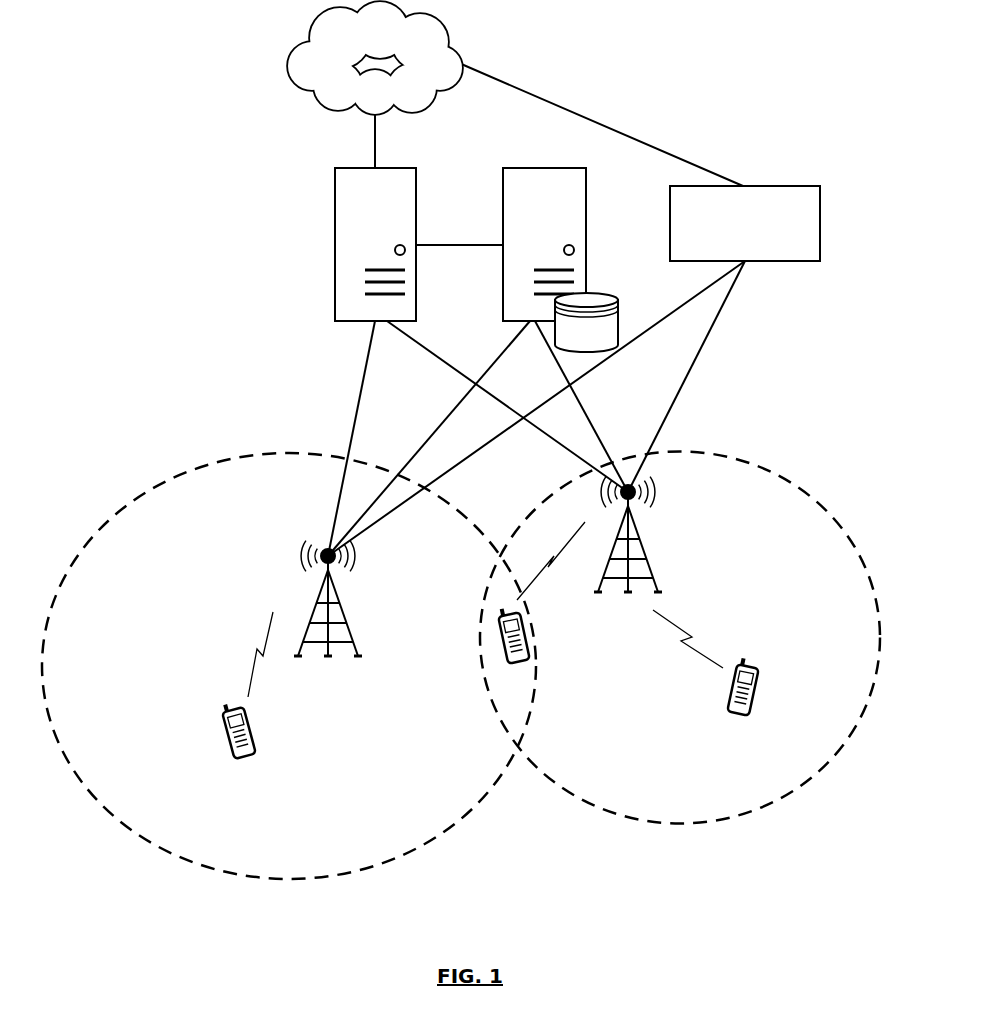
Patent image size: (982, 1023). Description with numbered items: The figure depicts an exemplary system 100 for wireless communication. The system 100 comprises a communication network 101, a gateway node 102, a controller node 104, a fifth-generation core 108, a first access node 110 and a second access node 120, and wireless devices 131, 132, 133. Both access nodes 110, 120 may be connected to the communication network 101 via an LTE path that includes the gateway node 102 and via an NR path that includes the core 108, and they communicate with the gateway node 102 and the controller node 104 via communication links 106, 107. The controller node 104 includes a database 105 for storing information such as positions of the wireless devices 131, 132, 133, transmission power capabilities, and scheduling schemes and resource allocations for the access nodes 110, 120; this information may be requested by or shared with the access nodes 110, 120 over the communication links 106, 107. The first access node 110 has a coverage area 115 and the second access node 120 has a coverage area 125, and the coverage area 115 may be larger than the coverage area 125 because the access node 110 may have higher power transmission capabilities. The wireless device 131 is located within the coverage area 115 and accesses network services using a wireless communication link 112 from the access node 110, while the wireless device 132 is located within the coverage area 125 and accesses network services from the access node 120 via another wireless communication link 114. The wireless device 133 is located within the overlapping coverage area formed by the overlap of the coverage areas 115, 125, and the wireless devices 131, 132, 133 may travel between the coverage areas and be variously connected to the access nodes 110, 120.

The system 100 is at (553, 78).
The communication network 101 is at (375, 58).
The gateway node 102 is at (335, 205).
The controller node 104 is at (586, 225).
The database 105 is at (617, 295).
The communication link 106 is at (438, 357).
The communication link 107 is at (403, 412).
The 5G core 108 is at (745, 223).
The access node 110 is at (275, 566).
The wireless communication link 112 is at (260, 655).
The wireless communication link 114 is at (685, 622).
The coverage area 115 is at (287, 880).
The access node 120 is at (645, 568).
The coverage area 125 is at (680, 824).
The wireless device 131 is at (237, 761).
The wireless device 132 is at (737, 716).
The wireless device 133 is at (517, 664).